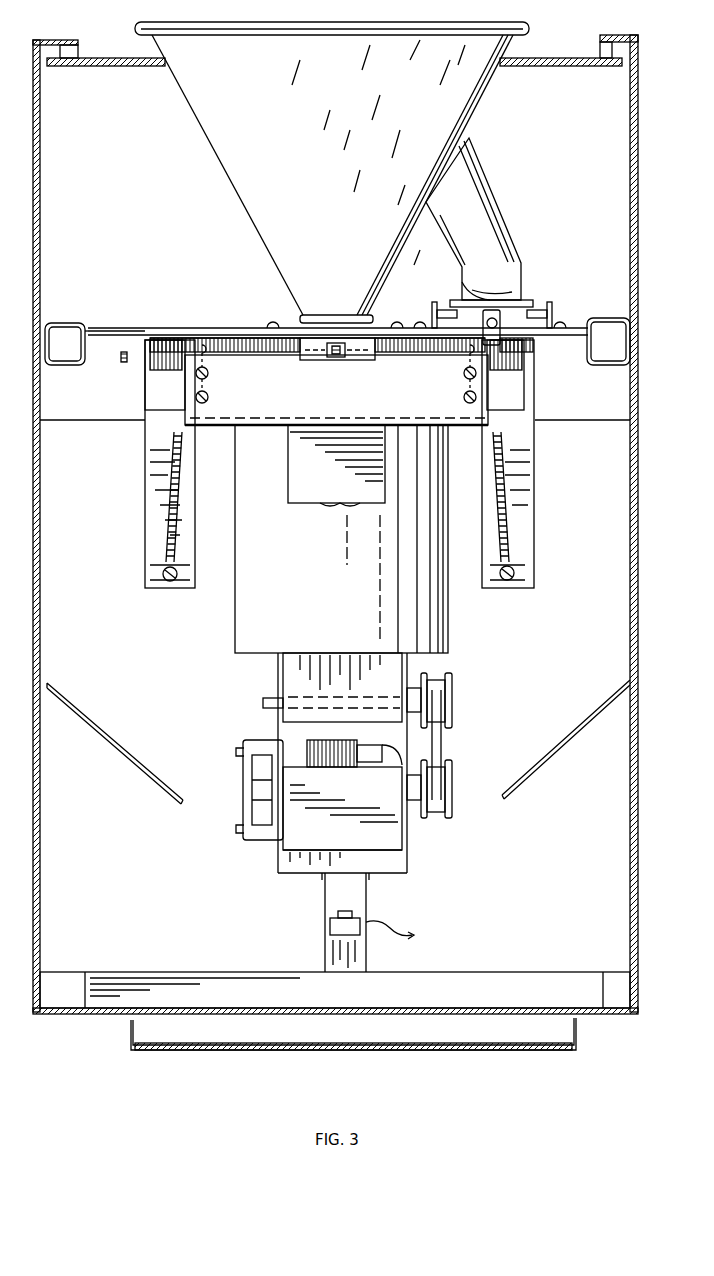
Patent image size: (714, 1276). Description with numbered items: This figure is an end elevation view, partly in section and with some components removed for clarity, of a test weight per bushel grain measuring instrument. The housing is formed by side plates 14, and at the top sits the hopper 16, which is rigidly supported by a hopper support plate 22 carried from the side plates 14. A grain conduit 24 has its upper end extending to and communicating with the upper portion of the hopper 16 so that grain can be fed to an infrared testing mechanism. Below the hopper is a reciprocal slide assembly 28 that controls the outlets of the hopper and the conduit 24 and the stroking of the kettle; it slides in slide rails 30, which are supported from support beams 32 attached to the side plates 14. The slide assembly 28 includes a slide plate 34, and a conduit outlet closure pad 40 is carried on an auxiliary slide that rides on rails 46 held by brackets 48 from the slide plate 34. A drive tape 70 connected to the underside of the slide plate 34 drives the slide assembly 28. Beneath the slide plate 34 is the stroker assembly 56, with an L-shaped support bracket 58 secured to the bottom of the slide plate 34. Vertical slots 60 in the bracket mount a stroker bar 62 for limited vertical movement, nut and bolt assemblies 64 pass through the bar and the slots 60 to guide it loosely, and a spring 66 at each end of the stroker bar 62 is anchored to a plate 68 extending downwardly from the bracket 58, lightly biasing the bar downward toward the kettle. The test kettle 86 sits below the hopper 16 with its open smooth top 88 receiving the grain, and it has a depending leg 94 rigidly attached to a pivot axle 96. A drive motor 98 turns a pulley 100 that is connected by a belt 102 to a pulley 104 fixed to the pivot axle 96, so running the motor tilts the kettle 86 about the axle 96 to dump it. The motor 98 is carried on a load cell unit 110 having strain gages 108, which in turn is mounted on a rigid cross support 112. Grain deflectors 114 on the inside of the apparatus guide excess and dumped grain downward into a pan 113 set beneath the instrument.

The side plates 14 is at (44, 224).
The hopper 16 is at (250, 182).
The hopper support plate 22 is at (124, 70).
The grain conduit 24 is at (495, 215).
The reciprocal slide assembly 28 is at (188, 320).
The slide rails 30 is at (97, 328).
The support beams 32 is at (64, 323).
The slide plate 34 is at (141, 328).
The conduit outlet closure pad 40 is at (540, 304).
The rails 46 is at (448, 300).
The brackets 48 is at (431, 306).
The stroker assembly 56 is at (143, 458).
The L-shaped support bracket 58 is at (160, 392).
The vertical slots 60 is at (213, 336).
The stroker bar 62 is at (336, 390).
The nut and bolt assemblies 64 is at (208, 399).
The spring 66 is at (505, 530).
The plate 68 is at (520, 556).
The drive tape 70 is at (120, 365).
The test kettle 86 is at (247, 614).
The open smooth top 88 is at (306, 418).
The depending leg 94 is at (290, 663).
The pivot axle 96 is at (262, 705).
The drive motor 98 is at (300, 748).
The pulley 100 is at (455, 796).
The belt 102 is at (443, 750).
The pulley 104 is at (455, 712).
The strain gages 108 is at (322, 905).
The load cell unit 110 is at (366, 958).
The rigid cross support 112 is at (482, 982).
The pan 113 is at (131, 1041).
The grain deflectors 114 is at (556, 745).